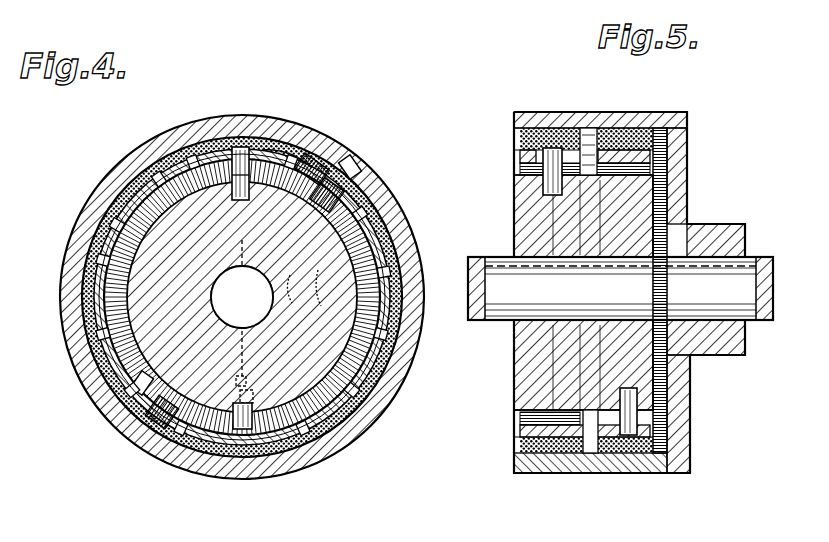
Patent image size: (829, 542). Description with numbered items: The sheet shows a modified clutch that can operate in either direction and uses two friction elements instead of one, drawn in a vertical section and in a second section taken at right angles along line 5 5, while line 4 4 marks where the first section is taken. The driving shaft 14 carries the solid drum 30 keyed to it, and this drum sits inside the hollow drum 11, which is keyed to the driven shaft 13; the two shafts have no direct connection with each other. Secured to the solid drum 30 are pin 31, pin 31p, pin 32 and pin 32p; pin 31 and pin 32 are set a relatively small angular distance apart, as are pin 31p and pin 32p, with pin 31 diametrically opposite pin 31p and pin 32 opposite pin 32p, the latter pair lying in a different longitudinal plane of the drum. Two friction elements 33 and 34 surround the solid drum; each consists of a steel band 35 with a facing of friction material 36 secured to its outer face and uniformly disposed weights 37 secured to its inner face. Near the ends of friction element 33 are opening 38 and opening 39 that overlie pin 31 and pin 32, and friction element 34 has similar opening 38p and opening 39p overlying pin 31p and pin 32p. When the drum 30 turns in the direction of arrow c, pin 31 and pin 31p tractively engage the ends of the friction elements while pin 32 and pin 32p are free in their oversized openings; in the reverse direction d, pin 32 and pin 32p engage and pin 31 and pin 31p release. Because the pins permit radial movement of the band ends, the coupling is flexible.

In FIG. 5, the section line 4- 4 is at (512, 98).
In FIG. 4, the section line 5- 5 is at (284, 106).
In FIG. 4, the hollow drum 11 is at (345, 425).
In FIG. 5, the hollow drum 11 is at (660, 474).
In FIG. 5, the driven shaft 13 is at (752, 265).
In FIG. 4, the driving shaft 14 is at (225, 292).
In FIG. 5, the driving shaft 14 is at (500, 327).
In FIG. 4, the solid drum 30 is at (378, 398).
In FIG. 5, the solid drum 30 is at (540, 365).
In FIG. 4, the pin 31 is at (240, 137).
In FIG. 5, the pin 31 is at (540, 130).
In FIG. 4, the pin 31p is at (212, 470).
In FIG. 4, the pin 32 is at (365, 195).
In FIG. 4, the pin 32p is at (160, 400).
In FIG. 4, the friction element 33 is at (92, 212).
In FIG. 5, the friction element 33 is at (512, 126).
In FIG. 5, the friction element 34 is at (612, 128).
In FIG. 4, the steel band 35 is at (92, 332).
In FIG. 5, the steel band 35 is at (635, 130).
In FIG. 4, the facing of friction material 36 is at (400, 262).
In FIG. 5, the facing of friction material 36 is at (514, 245).
In FIG. 4, the weight 37 is at (150, 163).
In FIG. 5, the weight 37 is at (520, 186).
In FIG. 4, the opening 38 is at (187, 133).
In FIG. 5, the opening 38 is at (512, 152).
In FIG. 4, the opening 38p is at (305, 475).
In FIG. 5, the opening 38p is at (680, 440).
In FIG. 4, the opening 39 is at (335, 165).
In FIG. 4, the opening 39p is at (140, 385).